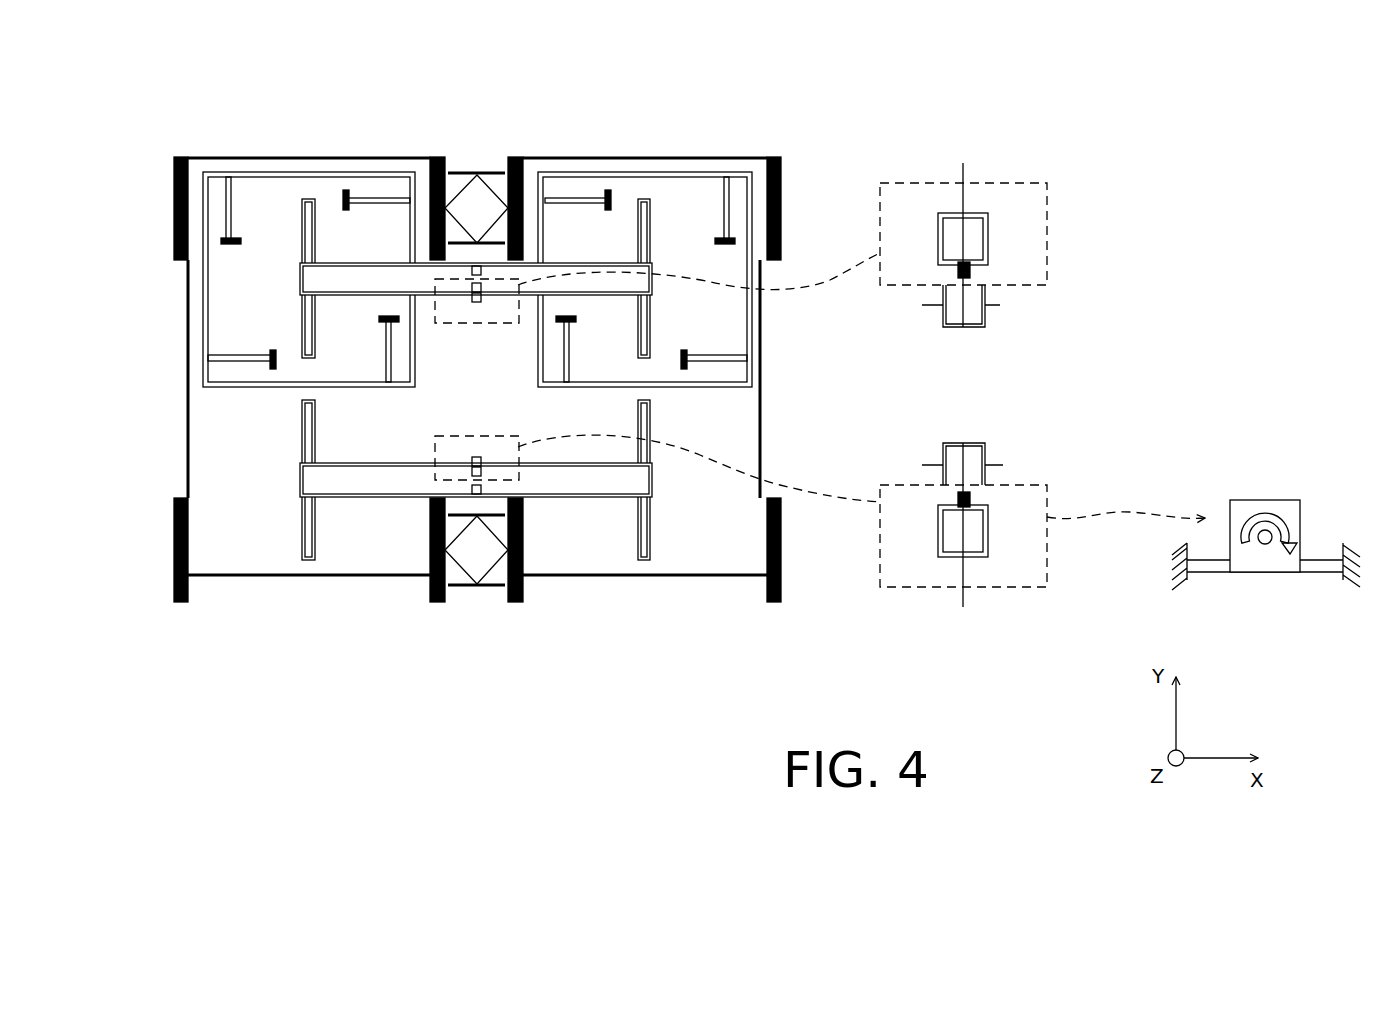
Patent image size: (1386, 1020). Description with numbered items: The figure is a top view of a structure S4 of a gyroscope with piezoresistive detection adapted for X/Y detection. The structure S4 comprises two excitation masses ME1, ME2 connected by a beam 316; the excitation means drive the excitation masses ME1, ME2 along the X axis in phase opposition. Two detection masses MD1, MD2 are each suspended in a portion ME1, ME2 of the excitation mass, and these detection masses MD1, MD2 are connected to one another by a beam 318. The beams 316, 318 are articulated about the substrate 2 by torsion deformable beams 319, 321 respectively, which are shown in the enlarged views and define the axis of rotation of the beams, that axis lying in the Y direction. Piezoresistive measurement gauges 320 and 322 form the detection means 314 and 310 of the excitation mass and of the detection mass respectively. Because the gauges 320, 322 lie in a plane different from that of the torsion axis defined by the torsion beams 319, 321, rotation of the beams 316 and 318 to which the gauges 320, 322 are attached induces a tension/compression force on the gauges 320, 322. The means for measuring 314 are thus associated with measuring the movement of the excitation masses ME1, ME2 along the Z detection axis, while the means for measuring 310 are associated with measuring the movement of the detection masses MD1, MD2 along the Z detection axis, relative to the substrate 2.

The structure S4 is at (797, 111).
The excitation mass ME1 is at (683, 165).
The excitation mass ME2 is at (196, 305).
The detection mass MD1 is at (625, 198).
The detection mass MD2 is at (272, 200).
The beam 318 is at (493, 278).
The beam 316 is at (355, 483).
The detection means 310 is at (1054, 274).
The torsion deformable beam 321 is at (974, 277).
The piezoresistive measurement gauges 322 is at (923, 305).
The means for measuring 314 is at (978, 440).
The piezoresistive measurement gauges 320 is at (923, 465).
The torsion deformable beam 319 is at (974, 497).
The substrate 2 is at (1350, 547).